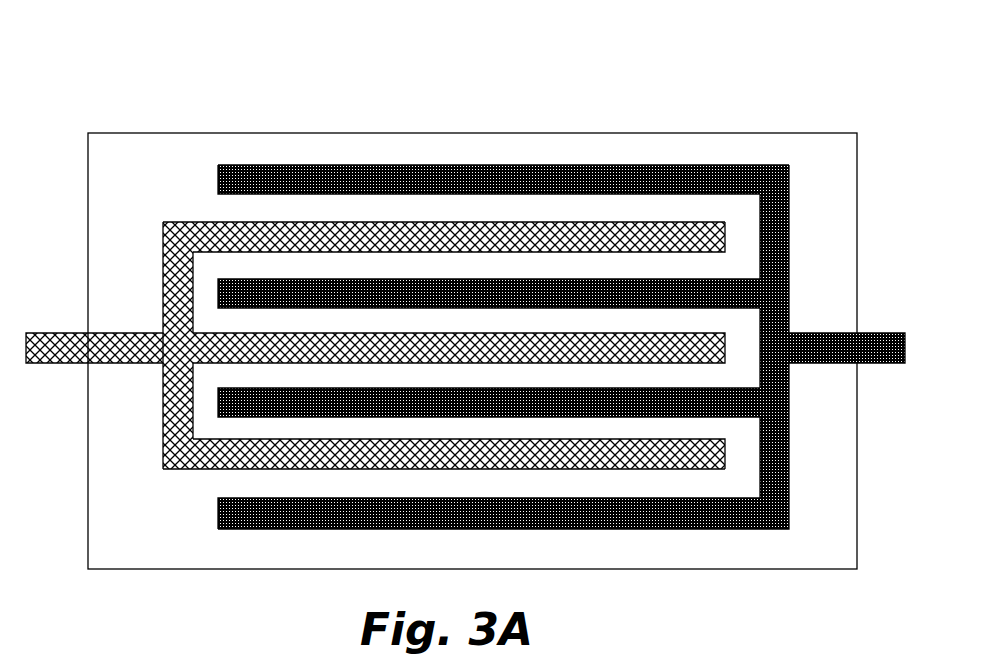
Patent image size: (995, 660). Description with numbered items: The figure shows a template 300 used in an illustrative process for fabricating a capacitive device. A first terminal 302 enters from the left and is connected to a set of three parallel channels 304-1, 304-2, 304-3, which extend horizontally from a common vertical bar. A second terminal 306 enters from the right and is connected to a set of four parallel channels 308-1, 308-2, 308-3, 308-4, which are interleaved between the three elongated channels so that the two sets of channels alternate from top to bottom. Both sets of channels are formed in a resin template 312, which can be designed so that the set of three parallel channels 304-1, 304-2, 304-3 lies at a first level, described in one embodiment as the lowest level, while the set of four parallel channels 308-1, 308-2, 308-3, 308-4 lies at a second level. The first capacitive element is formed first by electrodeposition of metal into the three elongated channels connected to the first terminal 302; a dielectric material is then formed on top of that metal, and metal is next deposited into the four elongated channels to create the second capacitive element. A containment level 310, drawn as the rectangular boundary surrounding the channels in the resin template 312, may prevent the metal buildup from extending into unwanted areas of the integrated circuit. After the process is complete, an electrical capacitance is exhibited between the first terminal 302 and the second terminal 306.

The interdigitated capacitor structure 300 is at (153, 52).
The first terminal 302 is at (57, 333).
The parallel channel 304-1 is at (311, 233).
The parallel channel 304-2 is at (311, 345).
The parallel channel 304-3 is at (311, 453).
The second terminal 306 is at (899, 333).
The parallel channel 308-1 is at (598, 178).
The parallel channel 308-2 is at (598, 291).
The parallel channel 308-3 is at (598, 399).
The parallel channel 308-4 is at (598, 510).
The containment level 310 is at (746, 138).
The resin template 312 is at (128, 535).